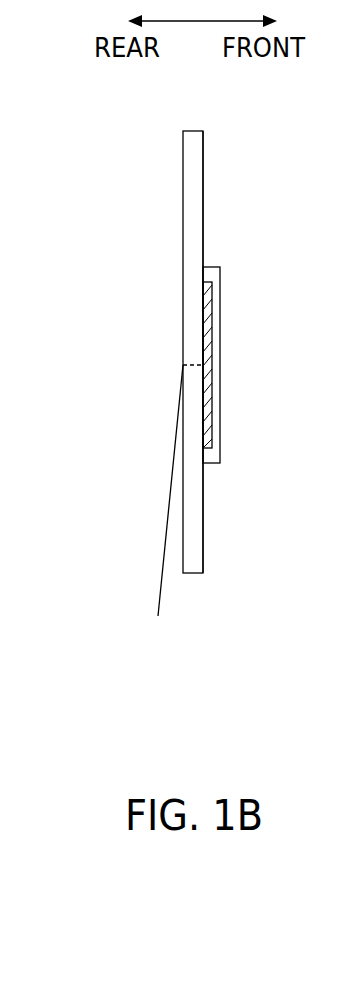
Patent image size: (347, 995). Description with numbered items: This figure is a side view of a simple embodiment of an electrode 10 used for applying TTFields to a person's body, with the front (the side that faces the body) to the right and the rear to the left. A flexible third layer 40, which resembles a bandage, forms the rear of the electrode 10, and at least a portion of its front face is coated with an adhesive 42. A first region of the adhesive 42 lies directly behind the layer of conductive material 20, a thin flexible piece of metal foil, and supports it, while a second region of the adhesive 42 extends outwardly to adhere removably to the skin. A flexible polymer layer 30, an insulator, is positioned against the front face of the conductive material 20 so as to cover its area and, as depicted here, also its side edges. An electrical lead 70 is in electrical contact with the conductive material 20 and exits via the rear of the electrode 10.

The electrode 10 is at (250, 141).
The layer of conductive material 20 is at (215, 267).
The flexible polymer layer 30 is at (220, 365).
The flexible third layer 40 is at (188, 131).
The adhesive 42 is at (203, 227).
The electrical lead 70 is at (162, 589).